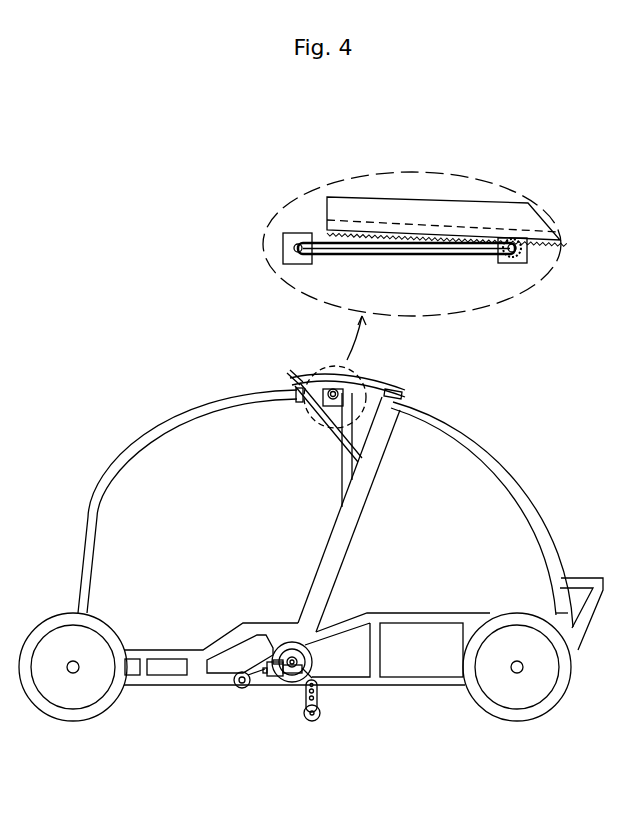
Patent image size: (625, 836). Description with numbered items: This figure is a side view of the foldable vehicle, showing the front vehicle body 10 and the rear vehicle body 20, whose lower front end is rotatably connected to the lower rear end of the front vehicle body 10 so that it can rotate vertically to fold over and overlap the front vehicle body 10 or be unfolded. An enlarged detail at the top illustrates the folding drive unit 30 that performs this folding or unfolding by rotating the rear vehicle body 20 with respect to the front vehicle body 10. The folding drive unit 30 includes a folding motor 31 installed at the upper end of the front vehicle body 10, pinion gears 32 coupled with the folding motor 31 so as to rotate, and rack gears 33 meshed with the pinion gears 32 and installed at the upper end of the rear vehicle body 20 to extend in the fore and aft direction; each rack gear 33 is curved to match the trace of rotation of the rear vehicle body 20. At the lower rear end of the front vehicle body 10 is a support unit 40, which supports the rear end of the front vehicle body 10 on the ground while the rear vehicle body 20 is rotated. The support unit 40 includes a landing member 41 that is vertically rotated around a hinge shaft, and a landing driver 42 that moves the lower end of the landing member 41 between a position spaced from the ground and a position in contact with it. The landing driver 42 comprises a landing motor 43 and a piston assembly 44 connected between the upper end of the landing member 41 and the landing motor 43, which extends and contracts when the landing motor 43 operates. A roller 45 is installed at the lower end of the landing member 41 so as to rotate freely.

The front vehicle body 10 is at (156, 431).
The rear vehicle body 20 is at (502, 470).
The folding drive unit 30 is at (318, 374).
The folding motor 31 is at (295, 236).
The pinion gear 32 is at (526, 264).
The rack gear 33 is at (362, 220).
The support unit 40 is at (308, 728).
The landing member 41 is at (318, 698).
The landing driver 42 is at (290, 737).
The landing motor 43 is at (274, 676).
The piston assembly 44 is at (293, 674).
The roller 45 is at (319, 717).